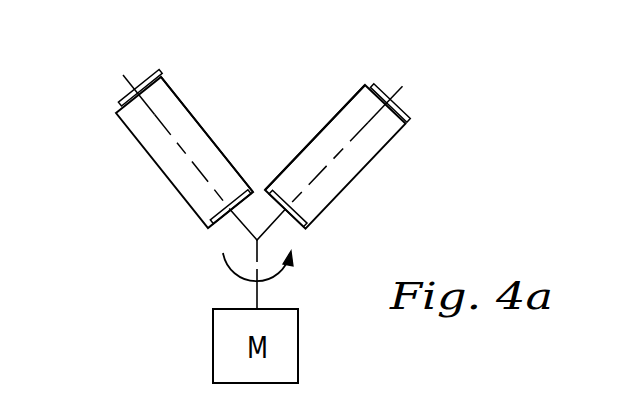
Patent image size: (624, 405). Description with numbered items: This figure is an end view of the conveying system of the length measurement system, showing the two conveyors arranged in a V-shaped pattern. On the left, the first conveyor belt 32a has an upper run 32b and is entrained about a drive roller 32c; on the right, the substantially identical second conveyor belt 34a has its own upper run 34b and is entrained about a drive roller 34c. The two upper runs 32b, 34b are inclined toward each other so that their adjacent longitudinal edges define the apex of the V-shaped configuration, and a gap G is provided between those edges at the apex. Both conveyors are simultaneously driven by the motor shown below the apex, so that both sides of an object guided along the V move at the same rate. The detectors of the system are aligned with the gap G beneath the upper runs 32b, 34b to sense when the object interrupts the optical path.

The conveyor belt 32a is at (136, 138).
The upper run 32b is at (172, 90).
The drive roller 32c is at (126, 100).
The conveyor belt 34a is at (394, 133).
The upper run 34b is at (352, 91).
The drive roller 34c is at (394, 104).
The gap G is at (253, 190).